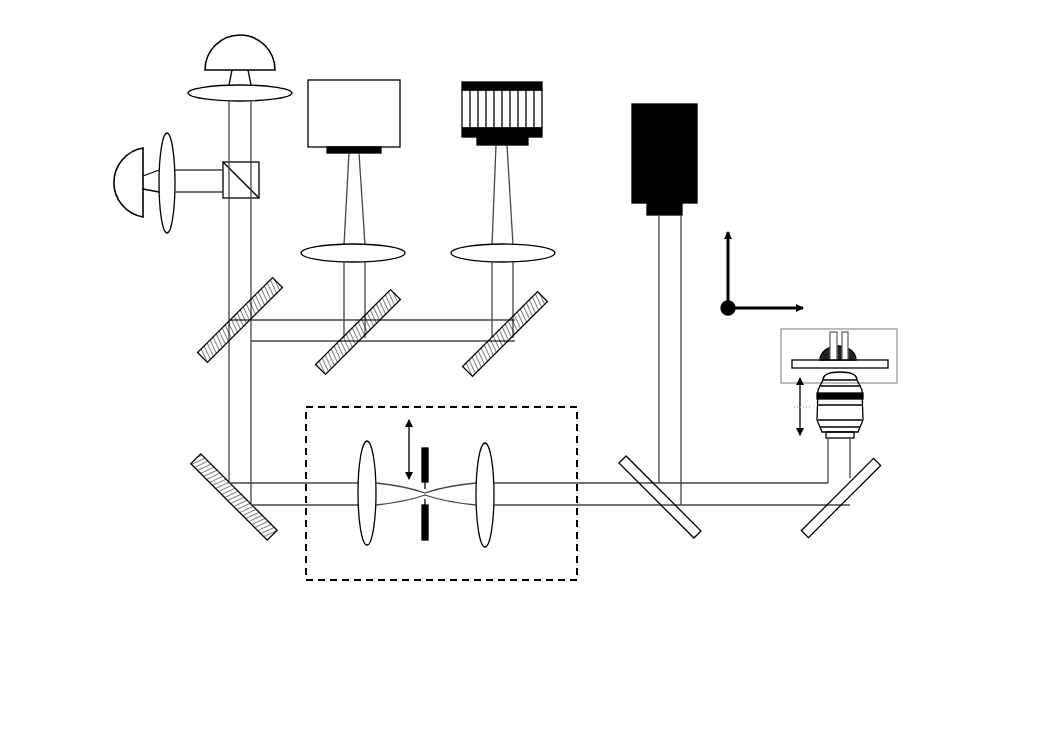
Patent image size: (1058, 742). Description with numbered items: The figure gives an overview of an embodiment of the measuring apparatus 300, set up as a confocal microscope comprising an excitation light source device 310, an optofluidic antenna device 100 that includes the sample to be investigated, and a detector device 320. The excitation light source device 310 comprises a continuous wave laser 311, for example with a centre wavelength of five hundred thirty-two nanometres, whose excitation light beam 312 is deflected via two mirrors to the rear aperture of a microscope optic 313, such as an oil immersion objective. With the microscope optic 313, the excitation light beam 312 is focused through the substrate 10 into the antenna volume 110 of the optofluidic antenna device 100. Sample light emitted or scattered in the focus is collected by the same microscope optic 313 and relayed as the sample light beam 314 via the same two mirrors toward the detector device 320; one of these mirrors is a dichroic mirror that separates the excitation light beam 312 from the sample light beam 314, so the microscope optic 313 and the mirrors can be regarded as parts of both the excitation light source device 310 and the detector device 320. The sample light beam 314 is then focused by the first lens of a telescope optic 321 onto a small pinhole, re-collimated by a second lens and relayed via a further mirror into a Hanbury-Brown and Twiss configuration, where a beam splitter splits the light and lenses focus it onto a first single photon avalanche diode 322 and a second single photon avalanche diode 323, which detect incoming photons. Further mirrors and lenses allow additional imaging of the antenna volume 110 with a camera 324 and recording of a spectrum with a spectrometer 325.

The measuring apparatus 300 is at (135, 521).
The excitation light source device 310 is at (730, 413).
The continuous wave laser 311 is at (664, 159).
The excitation light beam 312 is at (674, 303).
The microscope optic 313 is at (850, 405).
The sample light beam 314 is at (591, 497).
The detector device 320 is at (327, 305).
The telescope optic 321 is at (441, 493).
The first single photon avalanche diode 322 is at (130, 205).
The second single photon avalanche diode 323 is at (230, 58).
The camera 324 is at (354, 116).
The spectrometer 325 is at (502, 82).
The optofluidic antenna device 100 is at (790, 352).
The antenna volume 110 is at (845, 355).
The substrate 10 is at (878, 364).